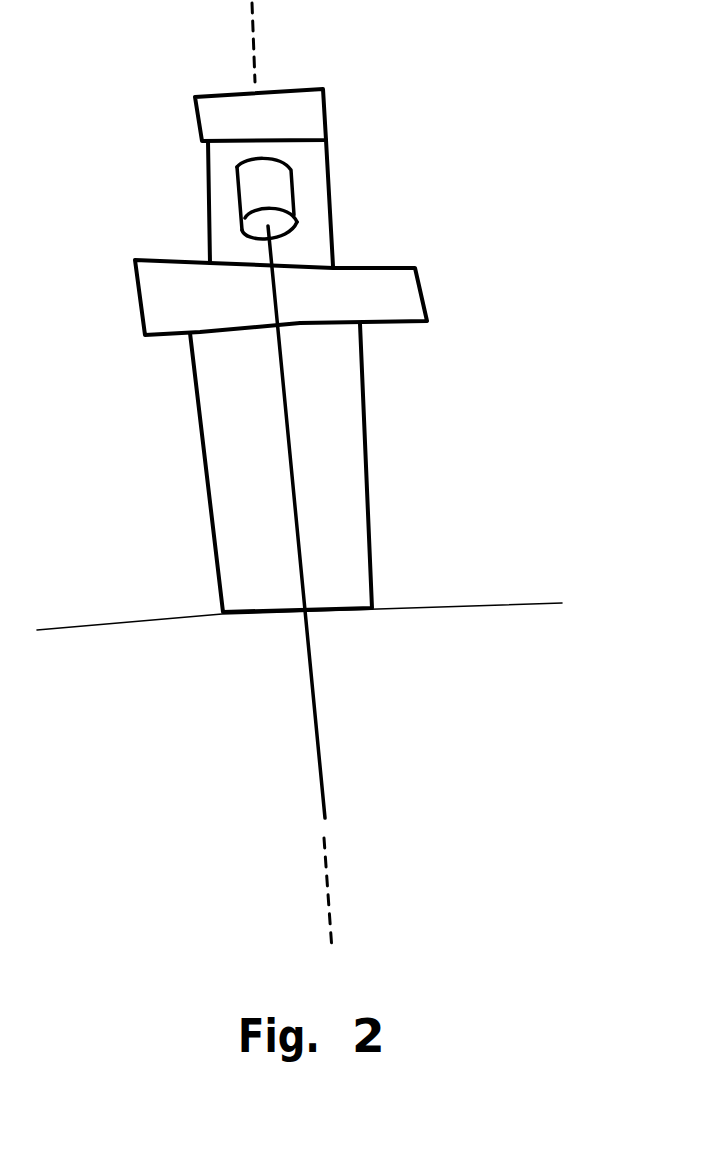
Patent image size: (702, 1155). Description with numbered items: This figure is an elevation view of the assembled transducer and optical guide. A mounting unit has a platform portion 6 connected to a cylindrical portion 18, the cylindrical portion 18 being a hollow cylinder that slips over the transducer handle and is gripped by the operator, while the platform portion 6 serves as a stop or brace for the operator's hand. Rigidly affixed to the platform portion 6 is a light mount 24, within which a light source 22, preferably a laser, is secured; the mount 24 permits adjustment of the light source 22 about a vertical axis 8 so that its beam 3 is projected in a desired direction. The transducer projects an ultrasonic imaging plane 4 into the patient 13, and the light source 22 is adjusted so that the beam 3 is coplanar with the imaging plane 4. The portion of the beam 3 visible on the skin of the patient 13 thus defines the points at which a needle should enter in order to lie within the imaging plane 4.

The vertical axis 8 is at (252, 10).
The light mount 24 is at (327, 170).
The light source 22 is at (253, 192).
The platform portion 6 is at (408, 300).
The cylindrical portion 18 is at (370, 422).
The patient 13 is at (473, 607).
The beam 3 is at (313, 718).
The imaging plane 4 is at (328, 903).